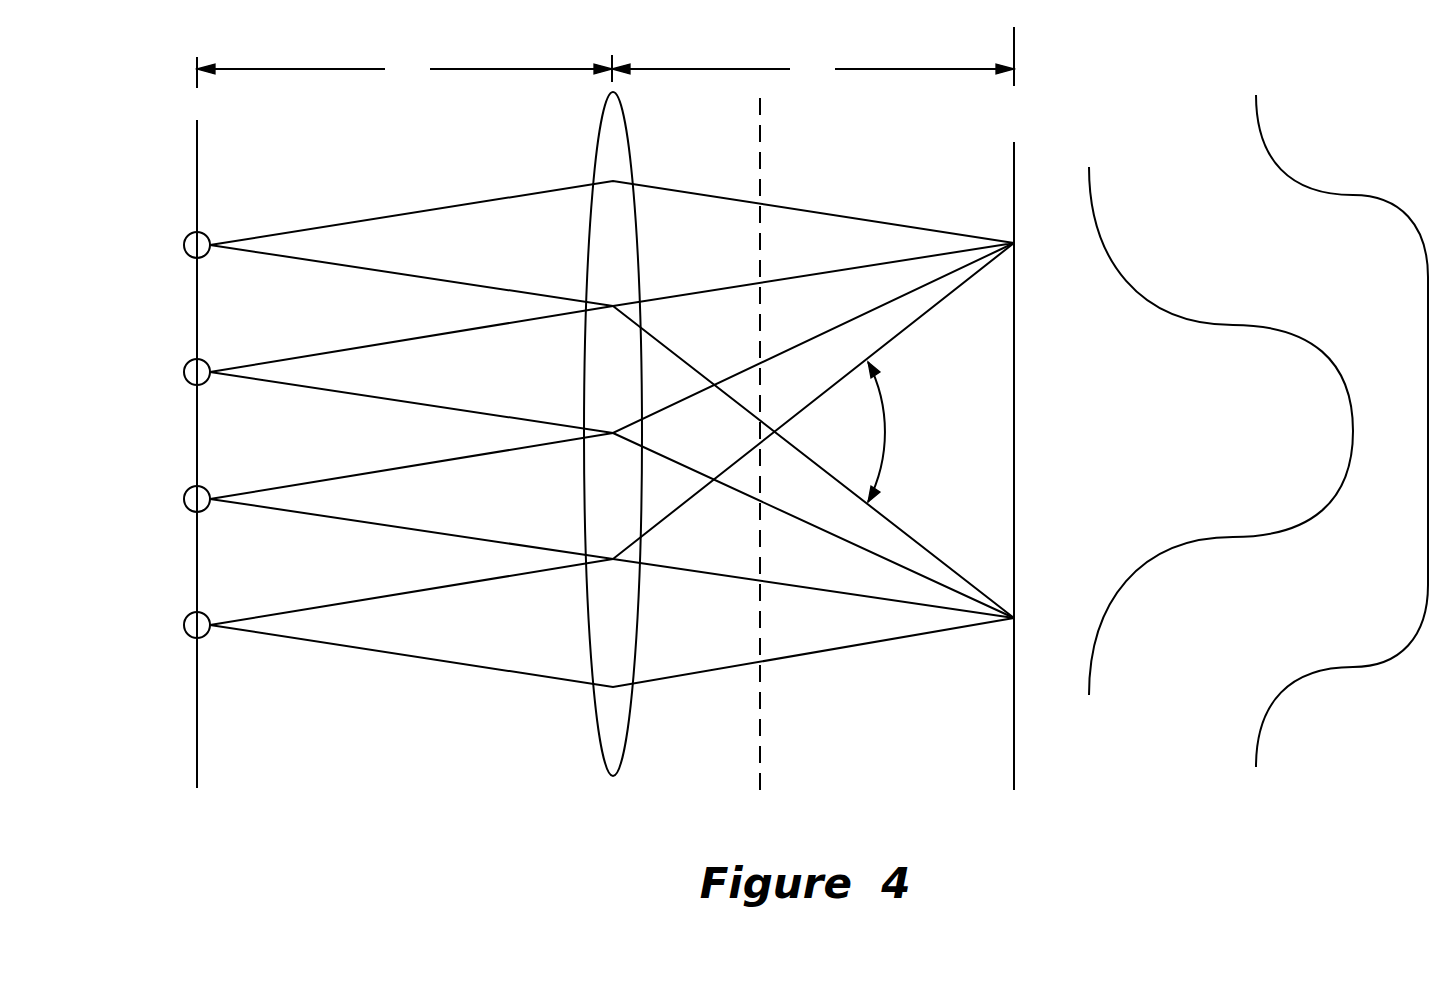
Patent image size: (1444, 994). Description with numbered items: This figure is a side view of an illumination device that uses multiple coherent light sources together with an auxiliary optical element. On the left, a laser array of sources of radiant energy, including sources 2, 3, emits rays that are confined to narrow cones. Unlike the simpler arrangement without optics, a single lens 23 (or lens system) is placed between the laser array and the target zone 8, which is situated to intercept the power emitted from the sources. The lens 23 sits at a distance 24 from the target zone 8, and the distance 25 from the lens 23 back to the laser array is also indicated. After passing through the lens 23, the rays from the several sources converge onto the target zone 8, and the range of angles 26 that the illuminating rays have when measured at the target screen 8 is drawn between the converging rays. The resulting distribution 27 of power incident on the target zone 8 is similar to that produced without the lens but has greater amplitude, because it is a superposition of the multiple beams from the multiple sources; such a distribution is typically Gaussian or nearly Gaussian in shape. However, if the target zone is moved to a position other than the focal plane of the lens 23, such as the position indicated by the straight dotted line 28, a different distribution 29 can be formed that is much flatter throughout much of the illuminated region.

The source of radiant energy 2 is at (187, 246).
The source of radiant energy 3 is at (187, 373).
The target zone 8 is at (1014, 408).
The lens 23 is at (626, 434).
The distance 24 is at (813, 70).
The distance 25 is at (404, 71).
The range of angles 26 is at (885, 432).
The distribution of power 27 is at (1221, 431).
The straight dotted line 28 is at (759, 472).
The distribution 29 is at (1342, 431).